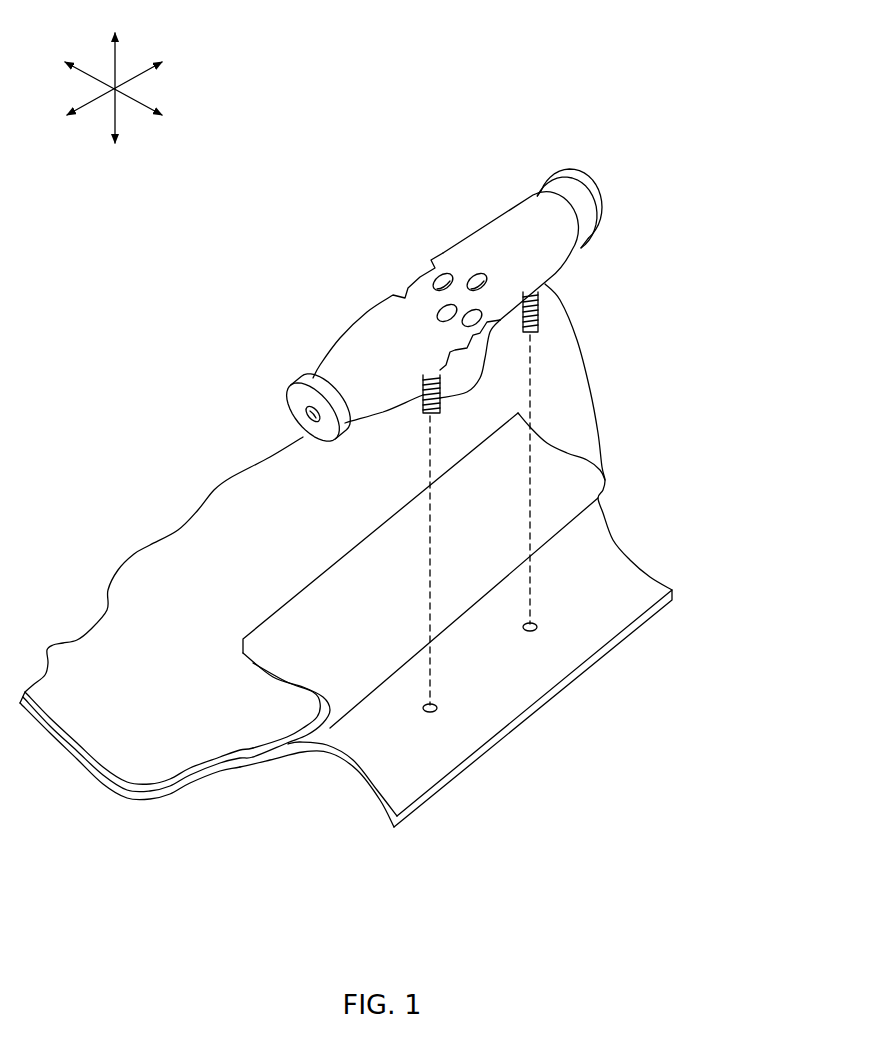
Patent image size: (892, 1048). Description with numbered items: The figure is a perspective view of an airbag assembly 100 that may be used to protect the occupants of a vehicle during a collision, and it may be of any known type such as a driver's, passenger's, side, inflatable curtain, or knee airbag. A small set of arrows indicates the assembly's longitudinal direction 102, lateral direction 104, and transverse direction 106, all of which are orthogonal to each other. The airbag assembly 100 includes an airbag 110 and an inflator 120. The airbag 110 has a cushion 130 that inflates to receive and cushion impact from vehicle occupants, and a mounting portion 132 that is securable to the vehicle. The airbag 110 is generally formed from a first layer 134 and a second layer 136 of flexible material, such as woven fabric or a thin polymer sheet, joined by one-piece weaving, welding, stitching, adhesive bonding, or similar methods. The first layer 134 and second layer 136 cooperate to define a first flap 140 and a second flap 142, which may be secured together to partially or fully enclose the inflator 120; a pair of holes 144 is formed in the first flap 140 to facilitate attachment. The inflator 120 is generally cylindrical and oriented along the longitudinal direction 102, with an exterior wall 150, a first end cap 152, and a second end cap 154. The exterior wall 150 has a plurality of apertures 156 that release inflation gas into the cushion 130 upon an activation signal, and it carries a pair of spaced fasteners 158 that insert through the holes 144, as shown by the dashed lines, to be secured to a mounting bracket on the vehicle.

The airbag assembly 100 is at (566, 92).
The longitudinal direction 102 is at (138, 68).
The lateral direction 104 is at (142, 97).
The transverse direction 106 is at (117, 120).
The airbag 110 is at (708, 353).
The inflator 120 is at (460, 187).
The cushion 130 is at (597, 357).
The mounting portion 132 is at (635, 535).
The first layer 134 is at (255, 762).
The second layer 136 is at (188, 776).
The first flap 140 is at (443, 772).
The second flap 142 is at (252, 663).
The holes 144 is at (535, 625).
The exterior wall 150 is at (507, 212).
The first end cap 152 is at (285, 390).
The second end cap 154 is at (586, 202).
The apertures 156 is at (473, 275).
The fasteners 158 is at (482, 383).